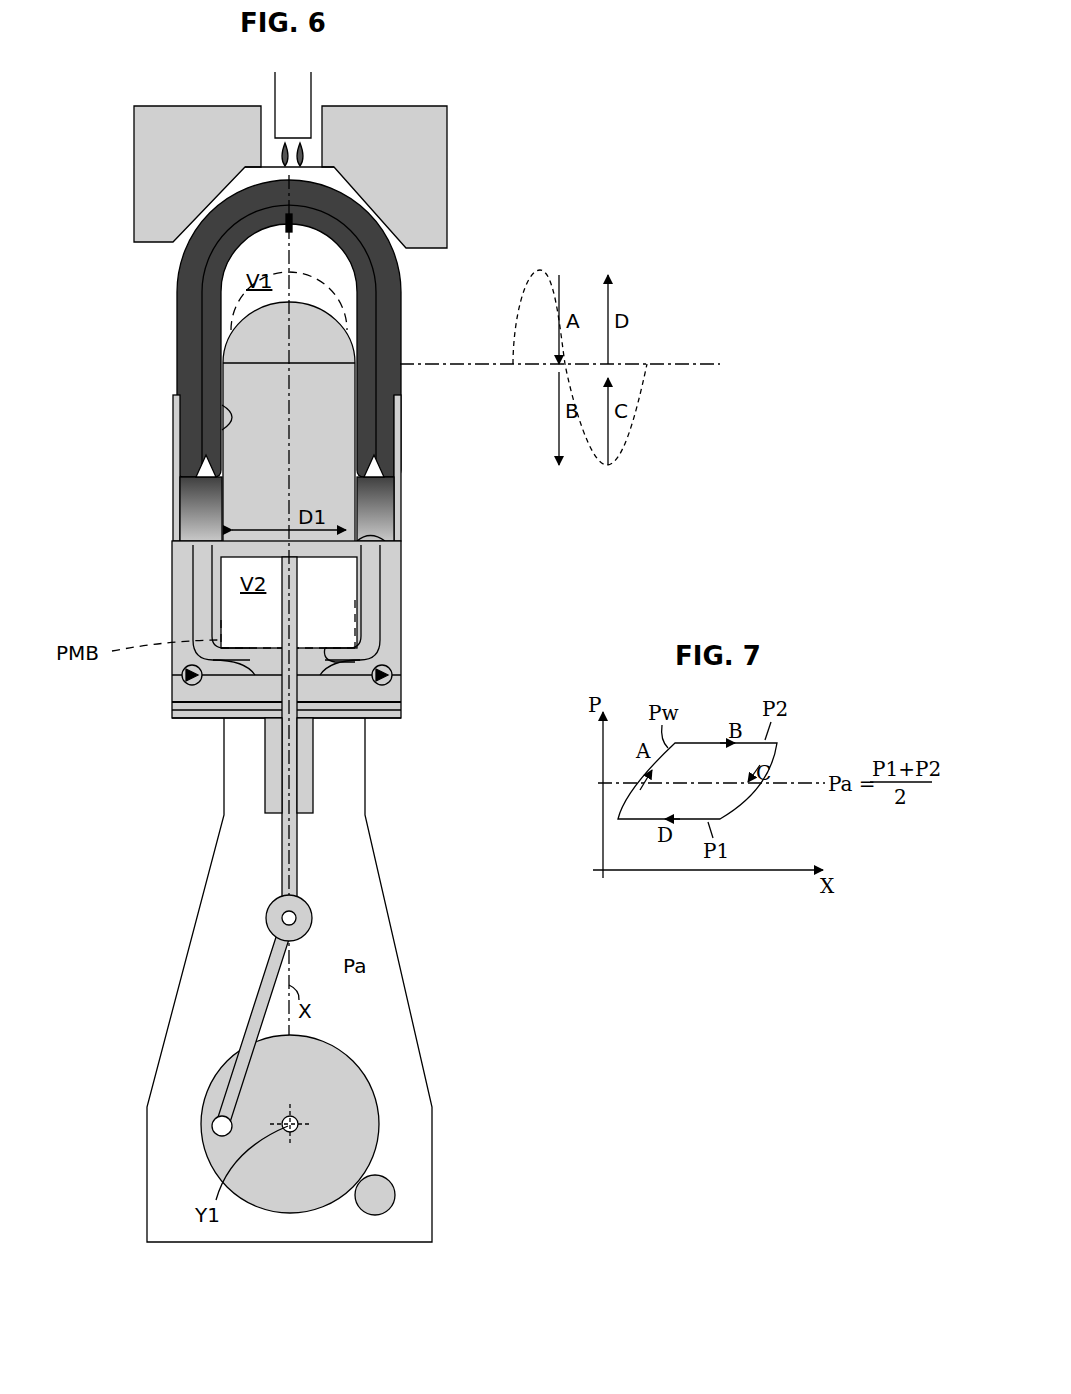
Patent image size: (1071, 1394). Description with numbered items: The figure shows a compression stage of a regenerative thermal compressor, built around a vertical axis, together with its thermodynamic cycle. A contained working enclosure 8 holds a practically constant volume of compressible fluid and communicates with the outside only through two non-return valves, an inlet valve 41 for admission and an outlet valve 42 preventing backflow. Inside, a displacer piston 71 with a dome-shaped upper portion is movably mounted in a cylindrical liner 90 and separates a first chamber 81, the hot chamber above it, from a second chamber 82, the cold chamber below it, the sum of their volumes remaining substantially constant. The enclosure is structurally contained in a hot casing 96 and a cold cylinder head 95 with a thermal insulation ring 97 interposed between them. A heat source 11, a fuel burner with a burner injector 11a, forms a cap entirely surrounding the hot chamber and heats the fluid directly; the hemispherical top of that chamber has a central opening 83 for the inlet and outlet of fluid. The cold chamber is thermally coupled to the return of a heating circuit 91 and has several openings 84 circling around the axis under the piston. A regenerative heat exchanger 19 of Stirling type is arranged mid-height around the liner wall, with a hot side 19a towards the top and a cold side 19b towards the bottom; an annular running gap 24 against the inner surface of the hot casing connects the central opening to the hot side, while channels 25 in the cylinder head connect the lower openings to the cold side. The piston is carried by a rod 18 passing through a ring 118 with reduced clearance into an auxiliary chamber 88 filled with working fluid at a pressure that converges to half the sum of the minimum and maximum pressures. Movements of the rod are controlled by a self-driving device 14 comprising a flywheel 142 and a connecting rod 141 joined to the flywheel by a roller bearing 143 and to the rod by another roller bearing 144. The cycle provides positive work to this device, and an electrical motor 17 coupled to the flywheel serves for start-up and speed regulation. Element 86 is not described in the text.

The heat source 11 is at (343, 112).
The burner injector 11a is at (287, 122).
The central opening 83 is at (289, 214).
The working enclosure 8 is at (176, 277).
The annular running gap 24 is at (202, 345).
The hot casing 96 is at (395, 340).
The regenerative heat exchanger 19 is at (178, 513).
The thermal insulation ring 97 is at (185, 472).
The hot side 19a is at (397, 470).
The cold side 19b is at (385, 540).
The first chamber 81 is at (330, 285).
The displacer piston 71 is at (289, 429).
The cylindrical liner 90 is at (226, 415).
The cold cylinder head 95 is at (385, 622).
The channels 25 is at (196, 586).
The second chamber 82 is at (348, 598).
The openings 84 is at (355, 638).
The inlet valve 41 is at (192, 678).
The outlet valve 42 is at (384, 678).
The heating circuit 91 is at (390, 712).
The base plate 86 is at (345, 712).
The rod 18 is at (300, 850).
The ring 118 is at (268, 772).
The auxiliary chamber 88 is at (200, 885).
The self-driving device 14 is at (311, 1054).
The flywheel 142 is at (343, 1135).
The connecting rod 141 is at (243, 1058).
The roller bearing 144 is at (266, 930).
The roller bearing 143 is at (222, 1128).
The electrical motor 17 is at (393, 1205).